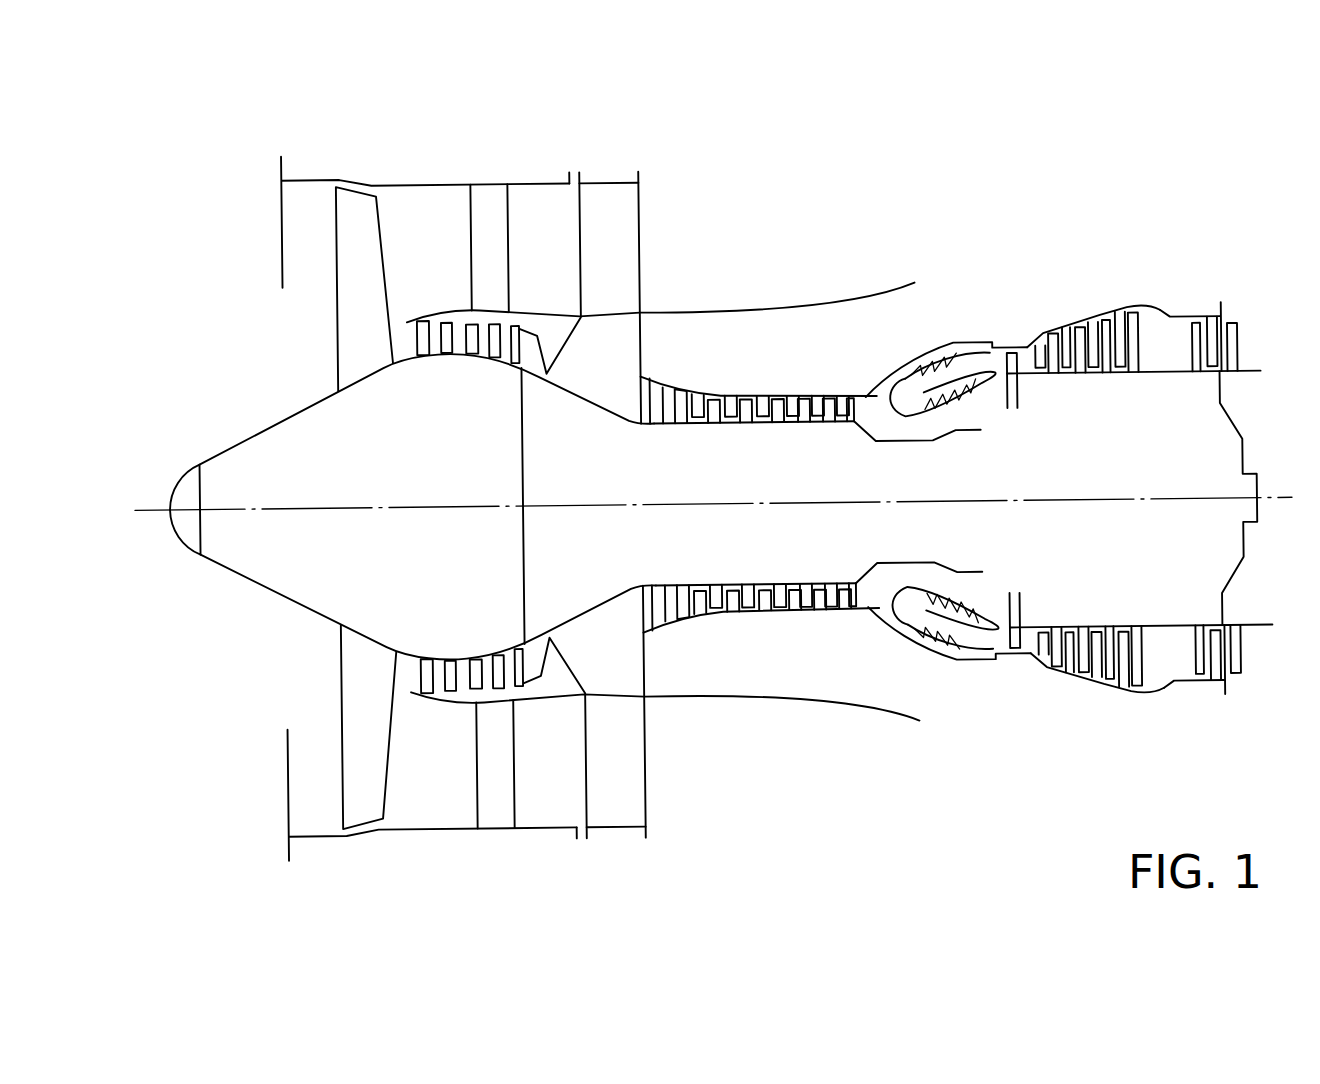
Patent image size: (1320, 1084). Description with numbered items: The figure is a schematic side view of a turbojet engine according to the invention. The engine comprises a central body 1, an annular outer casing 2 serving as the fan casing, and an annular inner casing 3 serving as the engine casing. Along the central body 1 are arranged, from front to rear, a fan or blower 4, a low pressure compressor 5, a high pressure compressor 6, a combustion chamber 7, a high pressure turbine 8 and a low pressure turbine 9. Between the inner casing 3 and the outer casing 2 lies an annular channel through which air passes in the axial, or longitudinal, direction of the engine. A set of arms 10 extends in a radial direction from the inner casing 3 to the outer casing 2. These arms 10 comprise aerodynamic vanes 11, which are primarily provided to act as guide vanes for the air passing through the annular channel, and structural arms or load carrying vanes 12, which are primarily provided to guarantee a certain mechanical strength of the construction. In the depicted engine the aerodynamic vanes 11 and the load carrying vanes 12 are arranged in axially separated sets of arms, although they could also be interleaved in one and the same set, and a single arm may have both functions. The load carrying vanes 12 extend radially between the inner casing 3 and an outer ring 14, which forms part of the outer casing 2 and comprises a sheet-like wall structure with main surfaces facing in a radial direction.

The central body 1 is at (307, 559).
The annular outer casing 2 is at (307, 177).
The annular inner casing 3 is at (548, 372).
The fan 4 is at (361, 307).
The low pressure compressor 5 is at (448, 709).
The high pressure compressor 6 is at (725, 630).
The combustion chamber 7 is at (946, 623).
The high pressure turbine 8 is at (1065, 311).
The low pressure turbine 9 is at (1199, 311).
The set of arms 10 is at (665, 237).
The aerodynamic vanes 11 is at (475, 228).
The load carrying vanes 12 is at (626, 216).
The outer ring 14 is at (629, 182).